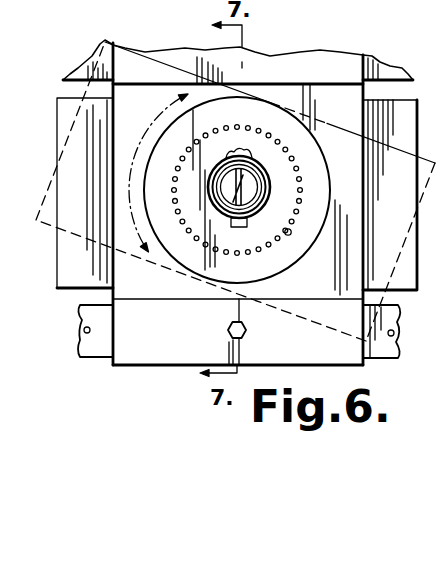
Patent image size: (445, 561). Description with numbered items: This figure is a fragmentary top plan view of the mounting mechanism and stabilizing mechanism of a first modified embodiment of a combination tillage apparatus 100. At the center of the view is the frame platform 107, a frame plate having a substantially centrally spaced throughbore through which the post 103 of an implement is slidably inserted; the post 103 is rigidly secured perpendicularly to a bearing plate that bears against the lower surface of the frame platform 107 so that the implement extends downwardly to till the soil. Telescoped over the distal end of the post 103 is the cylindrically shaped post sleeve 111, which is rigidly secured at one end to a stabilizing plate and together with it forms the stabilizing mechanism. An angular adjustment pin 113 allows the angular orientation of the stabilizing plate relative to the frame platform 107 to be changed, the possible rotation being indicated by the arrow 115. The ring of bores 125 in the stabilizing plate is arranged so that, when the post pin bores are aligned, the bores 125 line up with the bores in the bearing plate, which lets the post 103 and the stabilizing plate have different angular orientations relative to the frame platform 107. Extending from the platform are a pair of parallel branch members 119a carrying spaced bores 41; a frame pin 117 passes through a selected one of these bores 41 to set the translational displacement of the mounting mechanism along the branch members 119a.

The combination tillage apparatus 100 is at (300, 46).
The frame platform 107 is at (341, 97).
The parallel branch members 119a is at (387, 67).
The bores 41 is at (87, 333).
The arrow 115 is at (160, 114).
The bores 125 is at (268, 128).
The post 103 is at (270, 176).
The post sleeve 111 is at (266, 206).
The angular adjustment pin 113 is at (291, 243).
The frame pin 117 is at (248, 329).